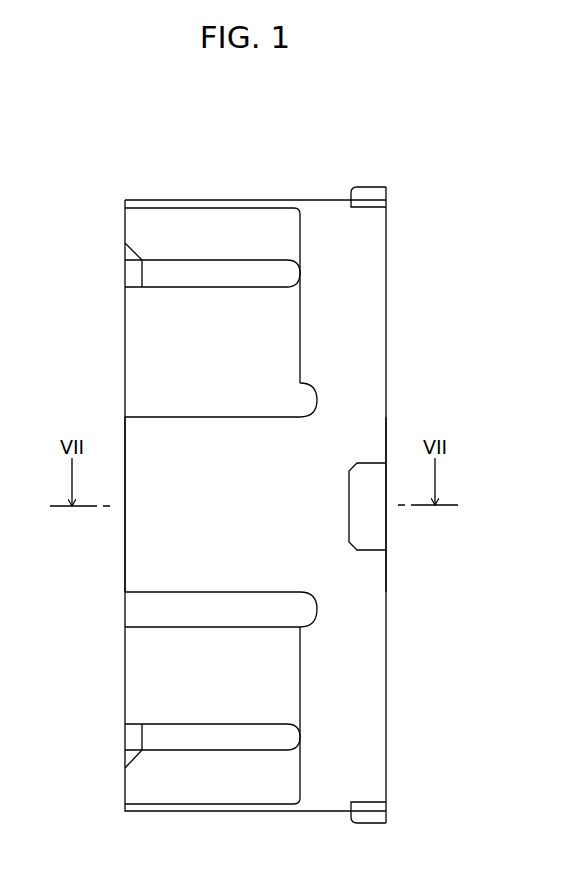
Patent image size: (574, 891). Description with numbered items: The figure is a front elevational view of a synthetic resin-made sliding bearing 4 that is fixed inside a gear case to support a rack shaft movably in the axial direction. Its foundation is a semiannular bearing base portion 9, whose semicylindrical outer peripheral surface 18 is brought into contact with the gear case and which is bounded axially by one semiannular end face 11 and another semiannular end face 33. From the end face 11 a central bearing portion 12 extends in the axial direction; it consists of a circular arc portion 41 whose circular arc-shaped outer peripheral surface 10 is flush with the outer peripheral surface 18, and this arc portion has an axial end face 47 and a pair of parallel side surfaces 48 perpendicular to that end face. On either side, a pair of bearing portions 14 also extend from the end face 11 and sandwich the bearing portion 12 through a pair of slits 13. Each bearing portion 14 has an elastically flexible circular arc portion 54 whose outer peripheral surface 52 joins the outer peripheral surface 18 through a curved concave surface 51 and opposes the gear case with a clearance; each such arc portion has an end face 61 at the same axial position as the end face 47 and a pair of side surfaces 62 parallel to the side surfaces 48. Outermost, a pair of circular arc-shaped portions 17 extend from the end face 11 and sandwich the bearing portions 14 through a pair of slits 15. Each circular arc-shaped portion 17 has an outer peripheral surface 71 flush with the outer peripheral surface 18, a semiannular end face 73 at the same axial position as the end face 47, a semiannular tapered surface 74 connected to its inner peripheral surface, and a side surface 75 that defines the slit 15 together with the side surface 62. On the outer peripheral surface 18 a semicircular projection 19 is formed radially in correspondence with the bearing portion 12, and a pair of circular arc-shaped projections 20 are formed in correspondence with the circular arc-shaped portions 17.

The synthetic resin-made sliding bearing 4 is at (72, 254).
The bearing base portion 9 is at (342, 657).
The outer peripheral surface 10 is at (137, 562).
The end face 11 is at (285, 318).
The bearing portion 12 is at (123, 512).
The slit 13 is at (138, 400).
The bearing portion 14 is at (124, 338).
The slit 15 is at (152, 275).
The circular arc-shaped portion 17 is at (219, 200).
The outer peripheral surface 18 is at (373, 565).
The semicircular projection 19 is at (365, 511).
The circular arc-shaped projection 20 is at (368, 201).
The end face 33 is at (386, 736).
The circular arc portion 41 is at (224, 457).
The end face 47 is at (125, 547).
The side surface 48 is at (147, 417).
The curved concave surface 51 is at (290, 292).
The outer peripheral surface 52 is at (250, 313).
The circular arc portion 54 is at (137, 368).
The end face 61 is at (125, 303).
The side surface 62 is at (257, 287).
The outer peripheral surface 71 is at (134, 201).
The end face 73 is at (125, 213).
The tapered surface 74 is at (130, 258).
The side surface 75 is at (165, 228).